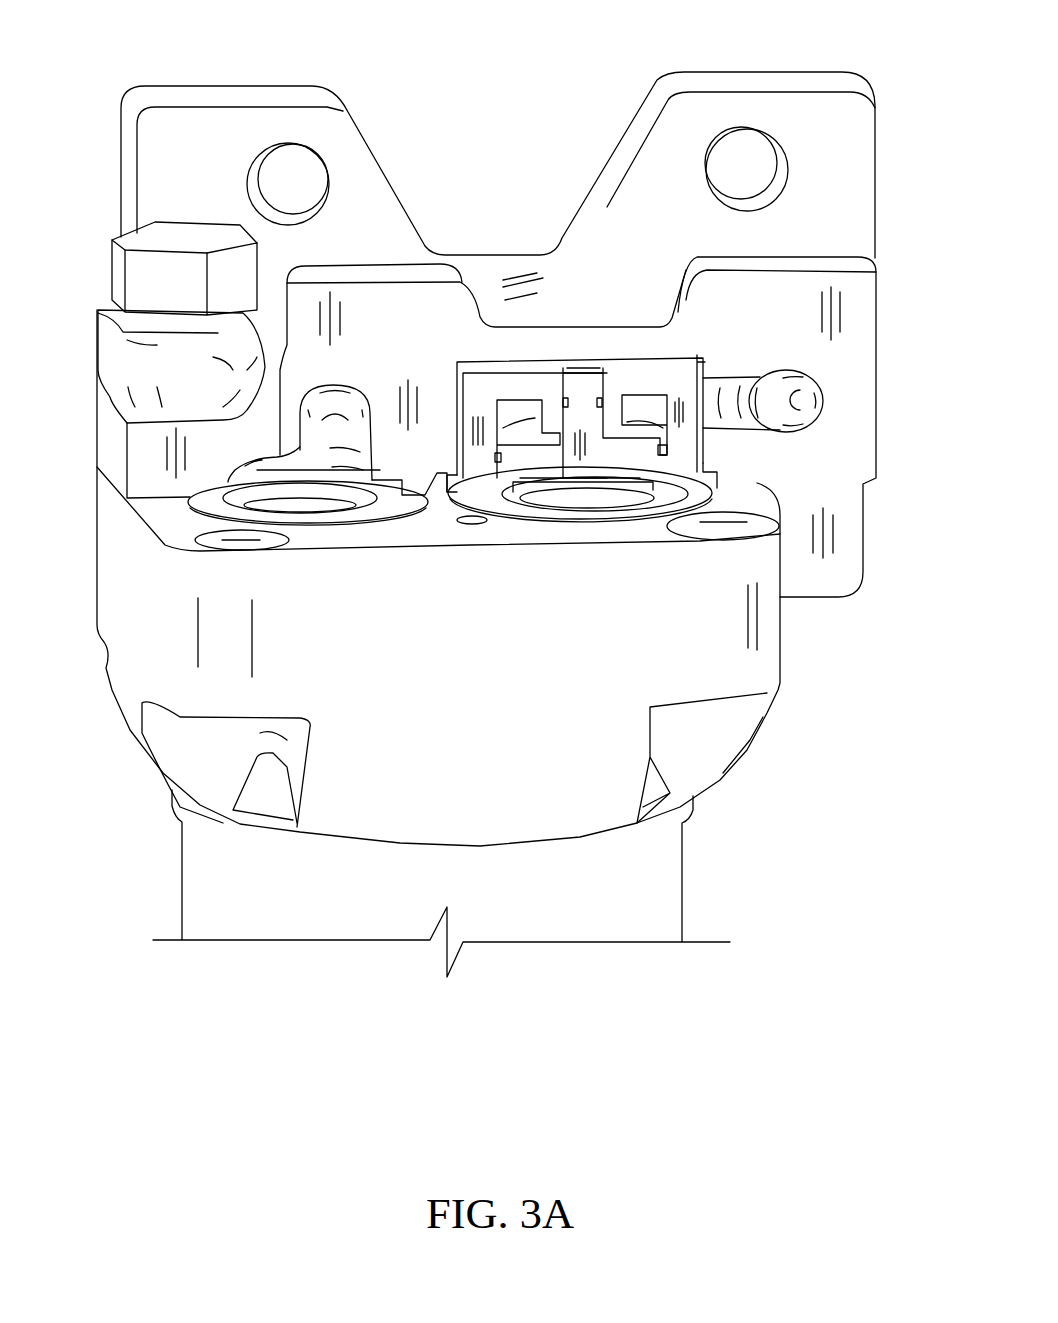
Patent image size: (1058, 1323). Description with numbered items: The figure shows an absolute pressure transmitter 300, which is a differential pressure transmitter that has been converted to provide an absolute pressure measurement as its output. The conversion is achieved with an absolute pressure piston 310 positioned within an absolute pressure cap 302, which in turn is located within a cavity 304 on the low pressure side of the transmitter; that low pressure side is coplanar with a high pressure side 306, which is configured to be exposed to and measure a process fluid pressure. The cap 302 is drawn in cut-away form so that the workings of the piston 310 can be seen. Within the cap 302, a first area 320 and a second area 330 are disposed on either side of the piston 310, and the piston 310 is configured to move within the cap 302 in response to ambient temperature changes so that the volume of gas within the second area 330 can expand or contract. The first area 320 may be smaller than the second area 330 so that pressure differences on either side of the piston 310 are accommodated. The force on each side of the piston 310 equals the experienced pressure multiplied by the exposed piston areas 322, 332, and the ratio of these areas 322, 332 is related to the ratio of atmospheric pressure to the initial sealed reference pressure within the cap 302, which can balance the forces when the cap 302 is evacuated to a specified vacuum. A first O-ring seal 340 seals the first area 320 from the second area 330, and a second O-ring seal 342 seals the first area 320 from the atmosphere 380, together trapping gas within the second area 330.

The absolute pressure transmitter 300 is at (503, 68).
The absolute pressure cap 302 is at (706, 366).
The cavity 304 is at (707, 357).
The high pressure side 306 is at (288, 497).
The absolute pressure piston 310 is at (620, 457).
The first area 320 is at (518, 407).
The piston area 322 is at (673, 378).
The second area 330 is at (605, 470).
The piston area 332 is at (690, 468).
The first O-ring seal 340 is at (667, 452).
The second O-ring seal 342 is at (607, 402).
The atmosphere 380 is at (498, 186).